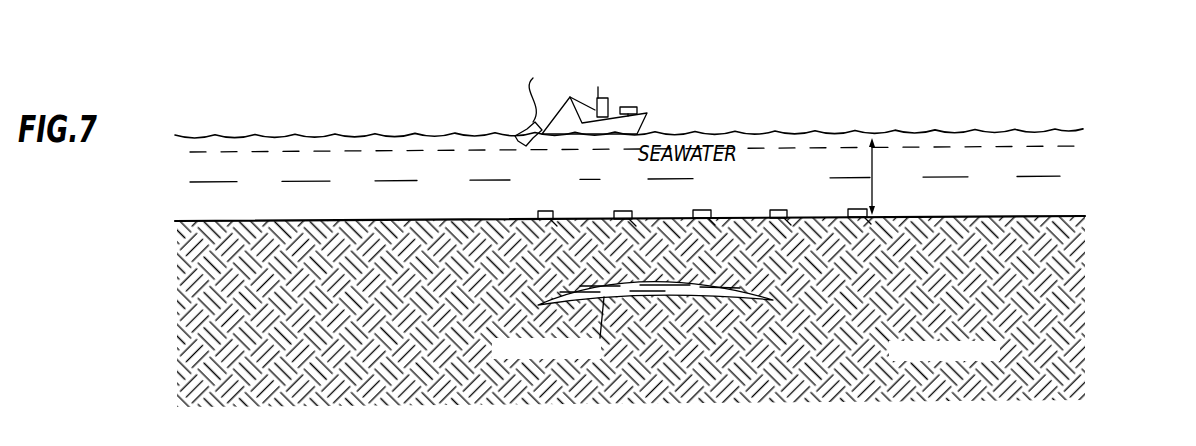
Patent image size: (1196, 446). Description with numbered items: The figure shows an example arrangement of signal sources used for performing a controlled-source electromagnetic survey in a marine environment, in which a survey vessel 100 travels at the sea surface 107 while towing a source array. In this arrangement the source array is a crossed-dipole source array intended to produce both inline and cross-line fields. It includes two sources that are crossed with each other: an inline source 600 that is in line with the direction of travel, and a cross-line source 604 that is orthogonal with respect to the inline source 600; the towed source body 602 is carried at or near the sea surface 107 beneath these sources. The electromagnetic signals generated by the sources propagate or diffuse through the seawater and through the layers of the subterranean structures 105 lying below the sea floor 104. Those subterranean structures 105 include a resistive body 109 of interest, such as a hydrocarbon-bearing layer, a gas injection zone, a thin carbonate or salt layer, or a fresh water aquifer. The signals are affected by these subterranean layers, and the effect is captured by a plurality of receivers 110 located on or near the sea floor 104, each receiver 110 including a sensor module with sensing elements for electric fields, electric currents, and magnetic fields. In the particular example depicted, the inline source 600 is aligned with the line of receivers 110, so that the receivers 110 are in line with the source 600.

The survey vessel 100 is at (648, 131).
The sea floor 104 is at (952, 212).
The subterranean structures 105 is at (1093, 400).
The sea surface 107 is at (975, 132).
The resistive body 109 is at (685, 297).
The receivers 110 is at (613, 211).
The inline source 600 is at (495, 118).
The towed source / buoy 602 is at (515, 139).
The cross-line source 604 is at (516, 87).